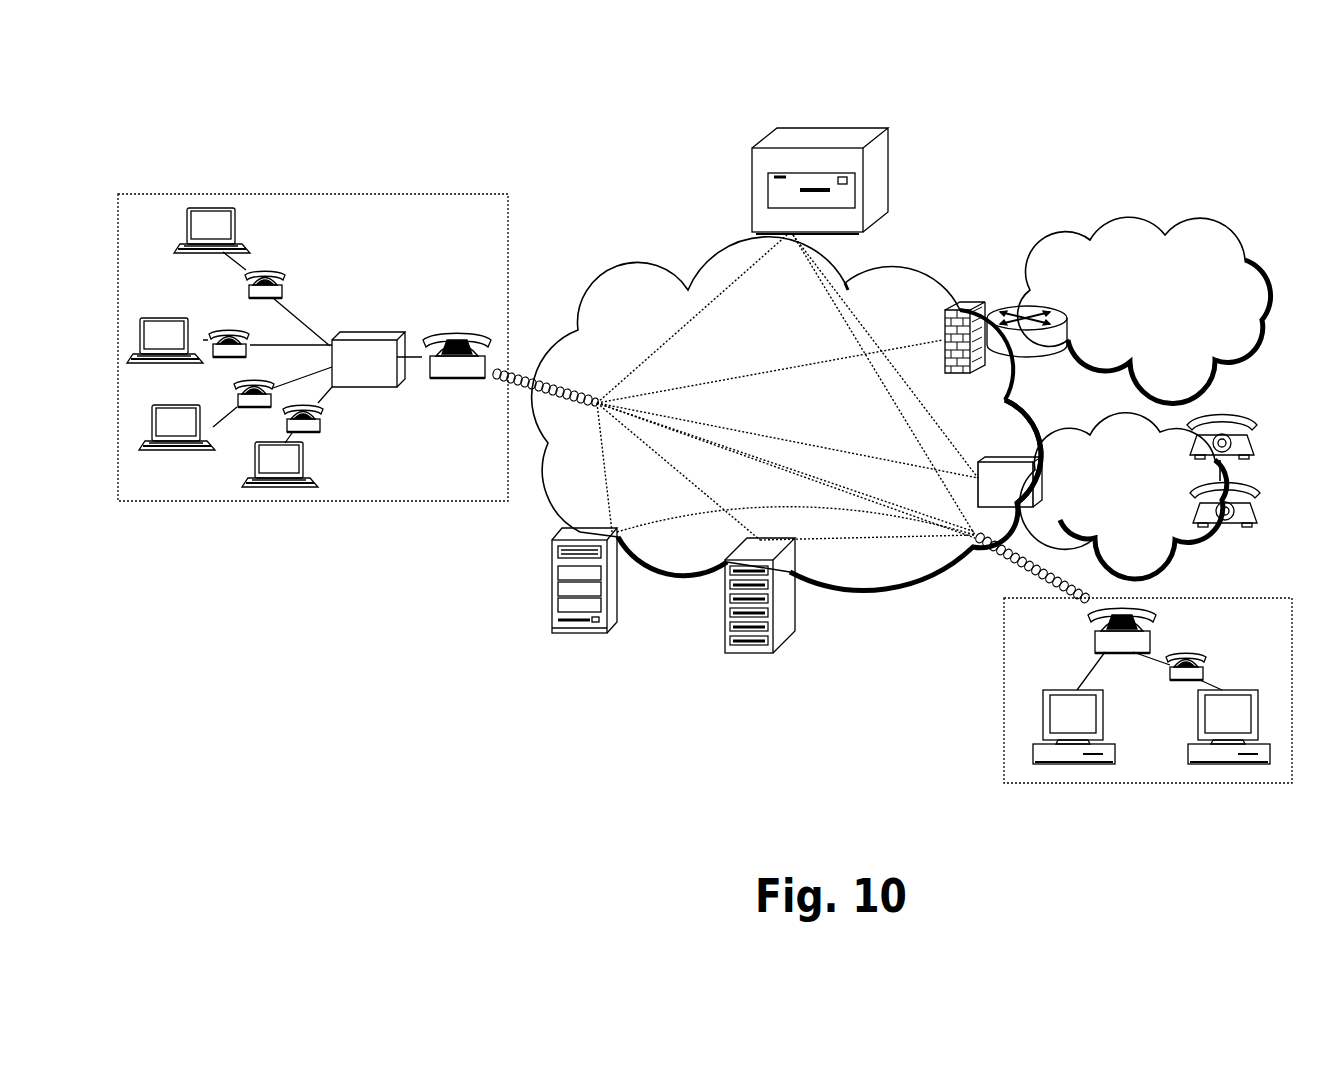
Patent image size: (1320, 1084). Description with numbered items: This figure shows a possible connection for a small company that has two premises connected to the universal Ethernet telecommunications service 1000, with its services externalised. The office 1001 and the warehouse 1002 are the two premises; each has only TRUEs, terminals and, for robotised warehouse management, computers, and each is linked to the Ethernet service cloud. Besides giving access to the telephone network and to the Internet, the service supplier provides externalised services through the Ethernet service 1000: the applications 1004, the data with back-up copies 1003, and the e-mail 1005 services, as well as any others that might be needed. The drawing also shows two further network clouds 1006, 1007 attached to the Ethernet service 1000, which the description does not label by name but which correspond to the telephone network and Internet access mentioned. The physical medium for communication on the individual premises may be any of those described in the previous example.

The universal Ethernet telecommunications service 1000 is at (786, 412).
The office 1001 is at (323, 162).
The warehouse 1002 is at (1162, 815).
The data with back-up copies service 1003 is at (565, 672).
The applications service 1004 is at (745, 682).
The e-mail service 1005 is at (721, 170).
The telephone network cloud 1006 is at (1119, 496).
The external network cloud 1007 is at (1108, 310).